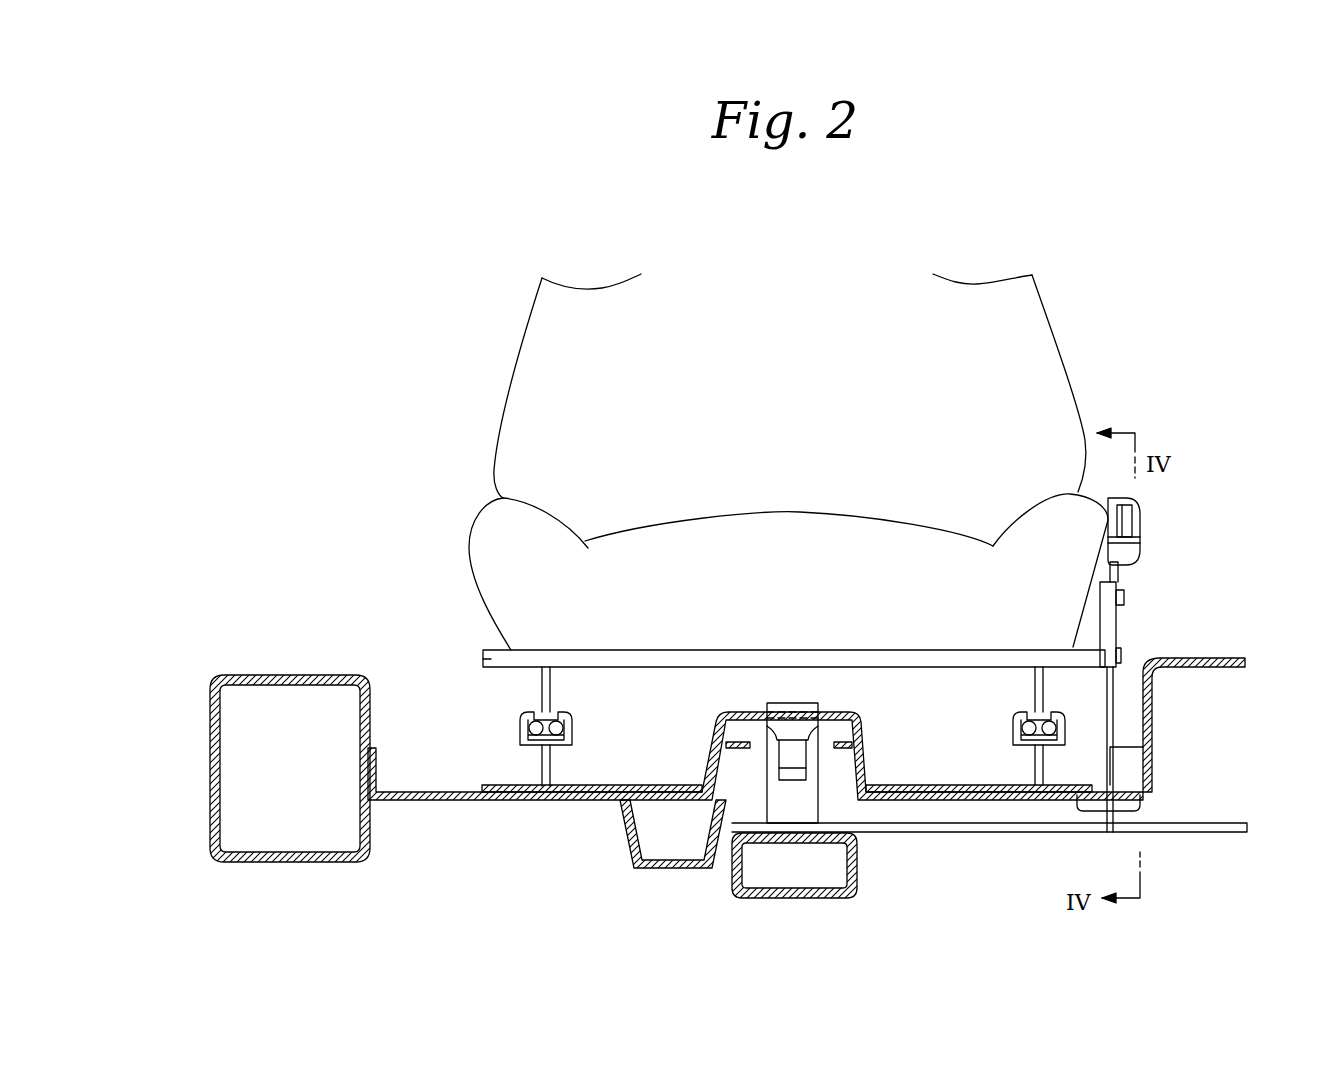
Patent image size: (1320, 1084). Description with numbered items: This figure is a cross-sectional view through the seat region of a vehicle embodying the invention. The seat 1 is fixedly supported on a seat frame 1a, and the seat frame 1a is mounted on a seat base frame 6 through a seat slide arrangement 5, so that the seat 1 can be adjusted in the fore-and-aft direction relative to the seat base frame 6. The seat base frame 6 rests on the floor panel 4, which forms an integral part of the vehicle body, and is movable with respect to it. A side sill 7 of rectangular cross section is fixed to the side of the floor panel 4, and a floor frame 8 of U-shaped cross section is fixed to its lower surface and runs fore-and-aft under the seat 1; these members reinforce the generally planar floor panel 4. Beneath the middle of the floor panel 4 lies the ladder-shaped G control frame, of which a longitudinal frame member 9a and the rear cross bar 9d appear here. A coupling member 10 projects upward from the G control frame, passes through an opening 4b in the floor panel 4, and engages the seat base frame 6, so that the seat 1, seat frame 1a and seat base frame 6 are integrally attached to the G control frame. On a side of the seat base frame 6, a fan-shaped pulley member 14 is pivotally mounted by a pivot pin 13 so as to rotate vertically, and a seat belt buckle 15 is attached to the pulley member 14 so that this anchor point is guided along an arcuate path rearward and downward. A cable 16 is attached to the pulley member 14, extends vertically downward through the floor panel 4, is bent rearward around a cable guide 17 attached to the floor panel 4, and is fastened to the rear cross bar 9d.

The seat 1 is at (532, 343).
The seat frame 1a is at (483, 660).
The floor panel 4 is at (458, 802).
The opening 4b is at (834, 750).
The seat slide arrangement 5 is at (510, 722).
The seat base frame 6 is at (505, 786).
The side sill 7 is at (290, 676).
The floor frame 8 is at (660, 868).
The longitudinal frame member 9a is at (800, 898).
The rear cross bar 9d is at (1007, 833).
The coupling member 10 is at (780, 797).
The pivot pin 13 is at (1118, 653).
The pulley member 14 is at (1113, 631).
The seat belt buckle 15 is at (1137, 542).
The cable 16 is at (1146, 748).
The cable guide 17 is at (1133, 804).